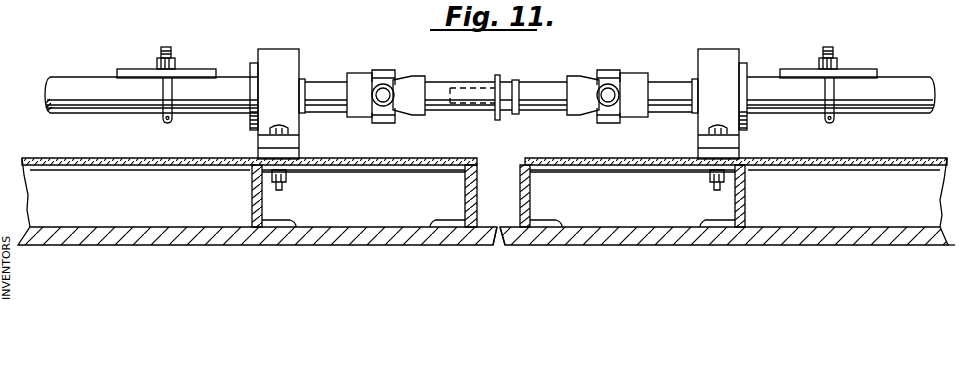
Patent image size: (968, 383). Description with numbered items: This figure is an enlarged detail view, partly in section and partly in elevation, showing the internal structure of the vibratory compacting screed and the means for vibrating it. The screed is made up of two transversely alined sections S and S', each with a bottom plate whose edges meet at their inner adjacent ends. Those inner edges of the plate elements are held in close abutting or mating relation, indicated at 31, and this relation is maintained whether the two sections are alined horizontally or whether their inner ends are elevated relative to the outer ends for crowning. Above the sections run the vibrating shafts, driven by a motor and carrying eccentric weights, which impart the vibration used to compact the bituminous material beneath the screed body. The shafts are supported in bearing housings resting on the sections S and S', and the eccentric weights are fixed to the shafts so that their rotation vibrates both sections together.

The abutting relation of plate edges 31 is at (497, 240).
The screed section S is at (257, 201).
The screed section S' is at (727, 201).